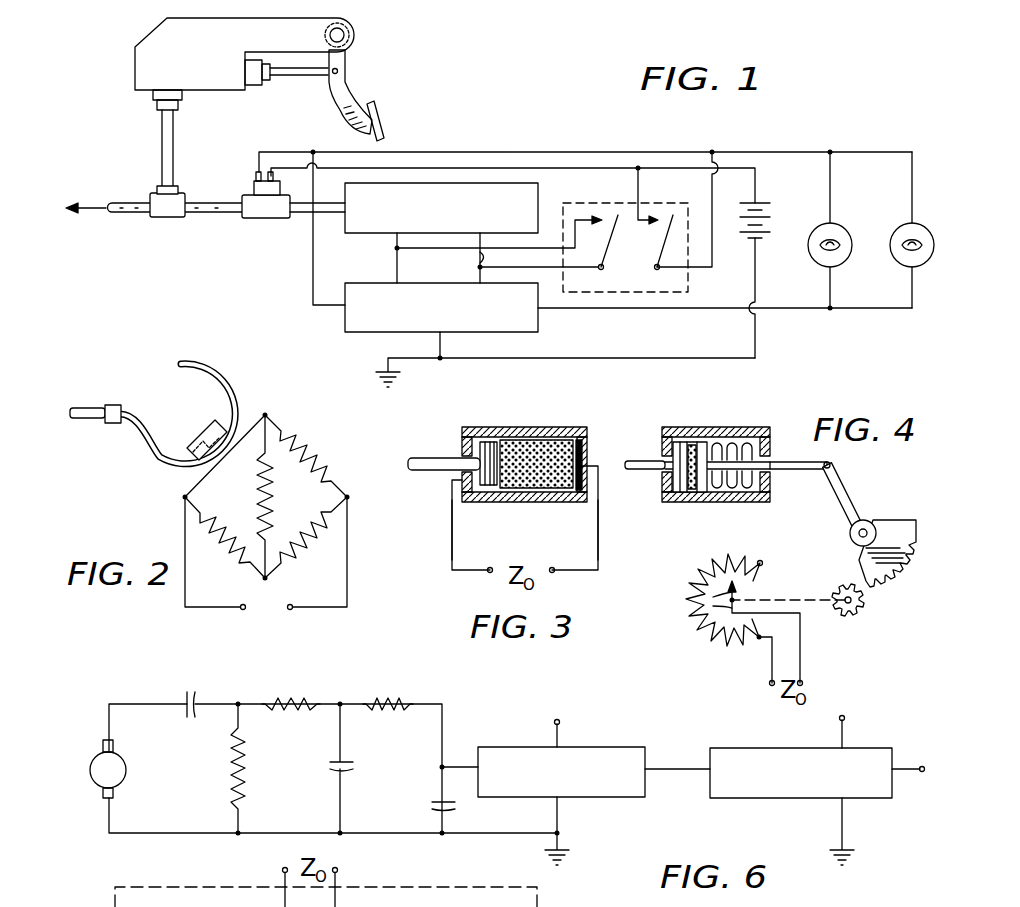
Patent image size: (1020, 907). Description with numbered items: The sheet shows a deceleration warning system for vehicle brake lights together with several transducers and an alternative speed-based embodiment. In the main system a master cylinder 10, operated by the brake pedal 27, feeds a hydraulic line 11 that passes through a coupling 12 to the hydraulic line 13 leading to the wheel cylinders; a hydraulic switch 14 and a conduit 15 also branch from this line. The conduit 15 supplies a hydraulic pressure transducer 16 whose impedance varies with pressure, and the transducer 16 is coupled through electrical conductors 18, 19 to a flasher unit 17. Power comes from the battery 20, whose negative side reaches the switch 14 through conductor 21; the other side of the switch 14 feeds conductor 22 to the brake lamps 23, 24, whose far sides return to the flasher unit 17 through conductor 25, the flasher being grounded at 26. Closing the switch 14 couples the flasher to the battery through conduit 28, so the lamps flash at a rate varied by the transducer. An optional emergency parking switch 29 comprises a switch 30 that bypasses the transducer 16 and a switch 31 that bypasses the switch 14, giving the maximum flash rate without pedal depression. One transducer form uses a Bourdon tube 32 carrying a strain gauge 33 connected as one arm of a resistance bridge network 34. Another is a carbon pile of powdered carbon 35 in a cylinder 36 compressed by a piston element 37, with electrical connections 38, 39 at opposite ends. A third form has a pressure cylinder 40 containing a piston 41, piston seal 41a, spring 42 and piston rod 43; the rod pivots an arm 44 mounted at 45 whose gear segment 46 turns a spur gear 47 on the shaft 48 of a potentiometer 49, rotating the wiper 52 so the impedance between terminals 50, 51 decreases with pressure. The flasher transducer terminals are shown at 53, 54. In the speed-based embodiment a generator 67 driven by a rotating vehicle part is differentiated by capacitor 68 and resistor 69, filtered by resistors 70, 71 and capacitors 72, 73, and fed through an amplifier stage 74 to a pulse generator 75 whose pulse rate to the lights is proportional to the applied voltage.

In FIG. 1, the master cylinder 10 is at (136, 31).
In FIG. 1, the hydraulic line 11 is at (161, 137).
In FIG. 1, the coupling 12 is at (186, 197).
In FIG. 1, the hydraulic line 13 is at (130, 202).
In FIG. 1, the hydraulic switch 14 is at (246, 193).
In FIG. 1, the conduit 15 is at (305, 214).
In FIG. 2, the conduit 15 is at (90, 405).
In FIG. 3, the conduit 15 is at (426, 456).
In FIG. 4, the conduit 15 is at (633, 471).
In FIG. 1, the hydraulic pressure transducer 16 is at (538, 200).
In FIG. 1, the flasher unit 17 is at (343, 315).
In FIG. 1, the electrical conductor 18 is at (396, 265).
In FIG. 2, the electrical conductor 18 is at (217, 610).
In FIG. 3, the electrical conductor 18 is at (452, 522).
In FIG. 4, the electrical conductor 18 is at (768, 662).
In FIG. 1, the electrical conductor 19 is at (478, 258).
In FIG. 2, the electrical conductor 19 is at (327, 609).
In FIG. 3, the electrical conductor 19 is at (597, 535).
In FIG. 4, the electrical conductor 19 is at (807, 658).
In FIG. 1, the battery 20 is at (774, 220).
In FIG. 1, the conductor 21 is at (532, 167).
In FIG. 1, the conductor 22 is at (604, 151).
In FIG. 1, the brake lamp 23 is at (838, 224).
In FIG. 1, the brake lamp 24 is at (894, 256).
In FIG. 1, the conductor 25 is at (672, 312).
In FIG. 1, the ground 26 is at (442, 357).
In FIG. 1, the brake pedal 27 is at (384, 117).
In FIG. 1, the conduit 28 is at (311, 258).
In FIG. 6, the conduit 28 is at (508, 889).
In FIG. 1, the emergency parking switch 29 is at (656, 197).
In FIG. 1, the switch 30 is at (610, 248).
In FIG. 1, the switch 31 is at (660, 240).
In FIG. 2, the Bourdon tube 32 is at (138, 411).
In FIG. 2, the strain gauge 33 is at (208, 418).
In FIG. 2, the resistance bridge network 34 is at (321, 448).
In FIG. 3, the carbon pile 35 is at (553, 447).
In FIG. 3, the cylinder 36 is at (525, 428).
In FIG. 3, the piston element 37 is at (490, 440).
In FIG. 3, the electrical connection 38 is at (588, 465).
In FIG. 3, the electrical connection 39 is at (461, 501).
In FIG. 4, the pressure cylinder 40 is at (750, 427).
In FIG. 4, the piston 41 is at (702, 440).
In FIG. 4, the piston seal 41a is at (693, 494).
In FIG. 4, the spring 42 is at (716, 482).
In FIG. 4, the piston rod 43 is at (796, 472).
In FIG. 4, the pivot arm 44 is at (857, 491).
In FIG. 4, the pivot mounting 45 is at (875, 523).
In FIG. 4, the gear segment 46 is at (893, 580).
In FIG. 4, the spur gear 47 is at (857, 614).
In FIG. 4, the shaft 48 is at (793, 597).
In FIG. 4, the potentiometer 49 is at (708, 644).
In FIG. 4, the terminal 50 is at (712, 603).
In FIG. 4, the terminal 51 is at (757, 644).
In FIG. 4, the wiper 52 is at (698, 578).
In FIG. 6, the terminal 53 is at (283, 871).
In FIG. 6, the terminal 54 is at (338, 871).
In FIG. 6, the generator 67 is at (127, 760).
In FIG. 6, the capacitor 68 is at (192, 720).
In FIG. 6, the resistor 69 is at (232, 766).
In FIG. 6, the resistor 70 is at (287, 713).
In FIG. 6, the resistor 71 is at (382, 712).
In FIG. 6, the capacitor 72 is at (328, 765).
In FIG. 6, the capacitor 73 is at (431, 805).
In FIG. 6, the amplifier stage 74 is at (600, 798).
In FIG. 6, the pulse generator 75 is at (738, 798).